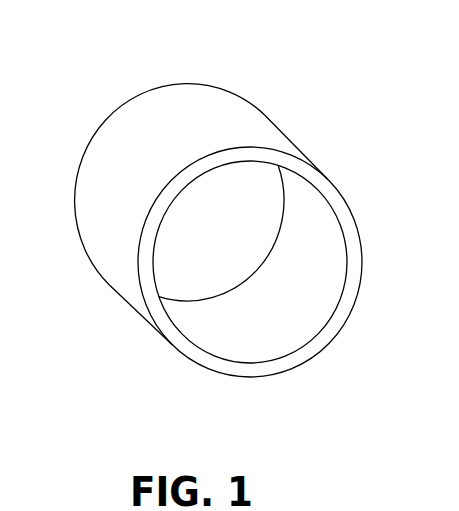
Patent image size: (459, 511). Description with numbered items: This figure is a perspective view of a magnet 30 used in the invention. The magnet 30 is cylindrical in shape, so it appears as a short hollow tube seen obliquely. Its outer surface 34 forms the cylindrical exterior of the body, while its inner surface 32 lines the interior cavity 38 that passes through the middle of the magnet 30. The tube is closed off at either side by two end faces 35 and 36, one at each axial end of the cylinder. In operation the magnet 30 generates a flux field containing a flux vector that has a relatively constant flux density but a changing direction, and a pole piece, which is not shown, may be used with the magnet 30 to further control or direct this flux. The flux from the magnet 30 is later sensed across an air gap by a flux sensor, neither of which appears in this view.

The magnet 30 is at (217, 214).
The inner surface 32 is at (265, 347).
The outer surface 34 is at (108, 147).
The end face 35 is at (200, 362).
The end face 36 is at (277, 130).
The interior cavity 38 is at (237, 255).